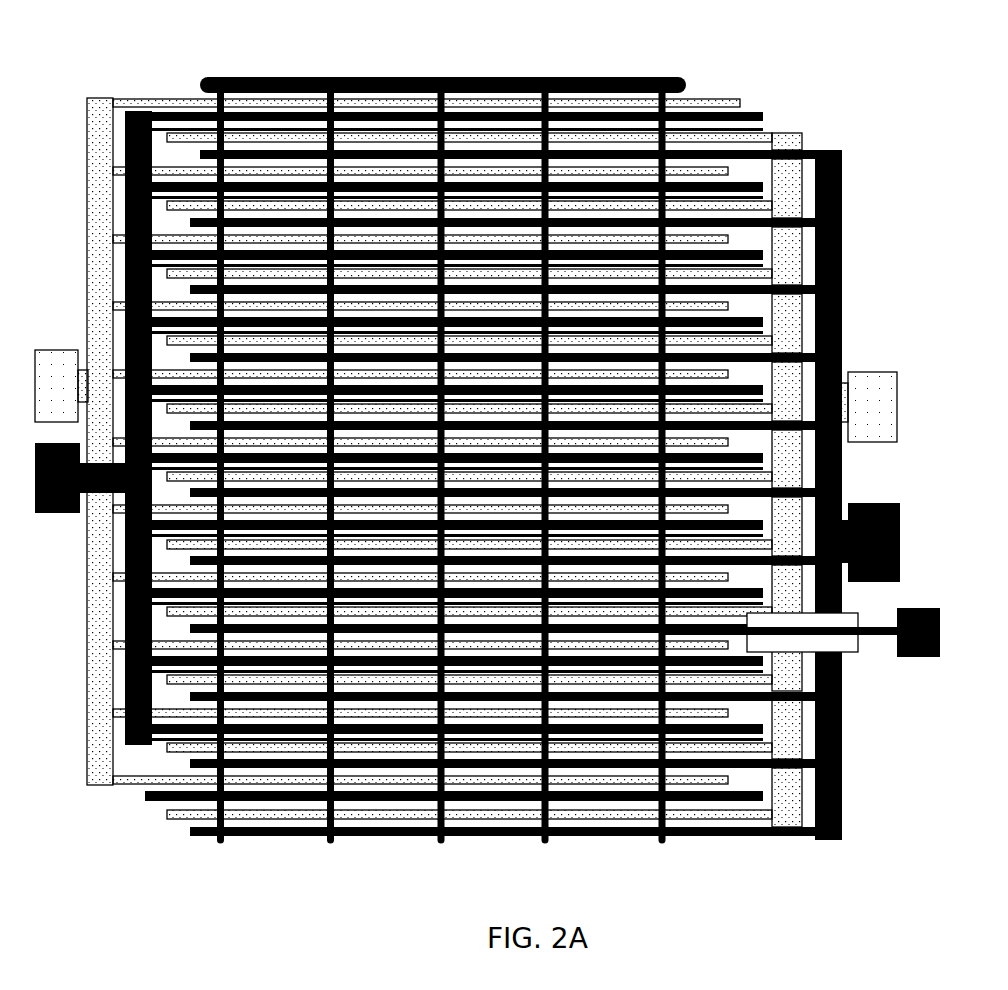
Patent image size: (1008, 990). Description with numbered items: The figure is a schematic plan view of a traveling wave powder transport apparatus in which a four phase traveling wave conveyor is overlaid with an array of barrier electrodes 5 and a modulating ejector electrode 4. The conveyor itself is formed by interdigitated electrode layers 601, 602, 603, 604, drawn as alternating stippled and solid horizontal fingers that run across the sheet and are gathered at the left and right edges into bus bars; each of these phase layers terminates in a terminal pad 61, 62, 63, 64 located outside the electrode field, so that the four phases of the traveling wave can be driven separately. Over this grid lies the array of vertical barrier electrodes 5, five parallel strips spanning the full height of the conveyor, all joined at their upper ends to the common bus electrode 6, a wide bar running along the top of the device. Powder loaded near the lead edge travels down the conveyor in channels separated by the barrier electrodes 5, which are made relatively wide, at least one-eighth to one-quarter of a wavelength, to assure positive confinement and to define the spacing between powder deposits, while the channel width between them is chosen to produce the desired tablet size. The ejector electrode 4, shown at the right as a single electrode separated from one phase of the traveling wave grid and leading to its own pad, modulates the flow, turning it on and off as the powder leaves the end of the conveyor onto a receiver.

The ejector electrode 4 is at (874, 641).
The barrier electrodes 5 is at (662, 846).
The common bus electrode 6 is at (410, 78).
The first electrode layer 601 is at (733, 101).
The second electrode layer 602 is at (203, 151).
The third electrode layer 603 is at (760, 138).
The fourth electrode layer 604 is at (158, 113).
The terminal pad 61 is at (64, 352).
The terminal pad 62 is at (60, 514).
The terminal pad 63 is at (878, 388).
The terminal pad 64 is at (882, 583).